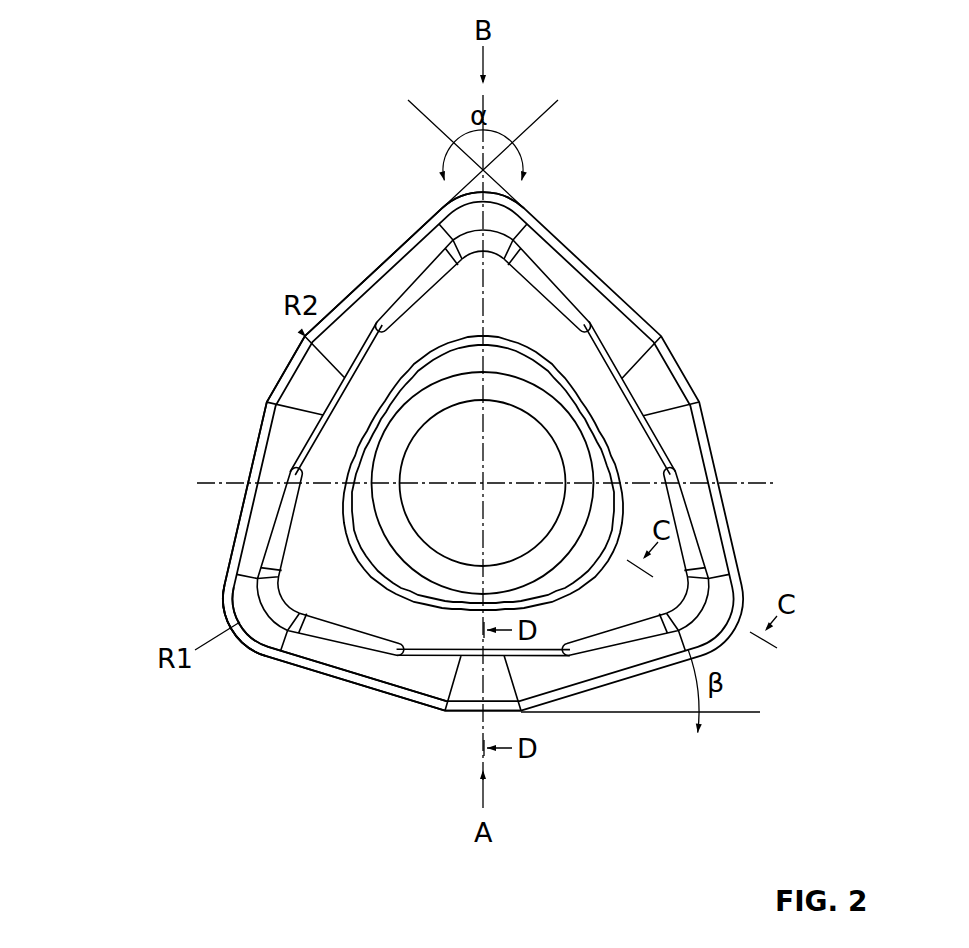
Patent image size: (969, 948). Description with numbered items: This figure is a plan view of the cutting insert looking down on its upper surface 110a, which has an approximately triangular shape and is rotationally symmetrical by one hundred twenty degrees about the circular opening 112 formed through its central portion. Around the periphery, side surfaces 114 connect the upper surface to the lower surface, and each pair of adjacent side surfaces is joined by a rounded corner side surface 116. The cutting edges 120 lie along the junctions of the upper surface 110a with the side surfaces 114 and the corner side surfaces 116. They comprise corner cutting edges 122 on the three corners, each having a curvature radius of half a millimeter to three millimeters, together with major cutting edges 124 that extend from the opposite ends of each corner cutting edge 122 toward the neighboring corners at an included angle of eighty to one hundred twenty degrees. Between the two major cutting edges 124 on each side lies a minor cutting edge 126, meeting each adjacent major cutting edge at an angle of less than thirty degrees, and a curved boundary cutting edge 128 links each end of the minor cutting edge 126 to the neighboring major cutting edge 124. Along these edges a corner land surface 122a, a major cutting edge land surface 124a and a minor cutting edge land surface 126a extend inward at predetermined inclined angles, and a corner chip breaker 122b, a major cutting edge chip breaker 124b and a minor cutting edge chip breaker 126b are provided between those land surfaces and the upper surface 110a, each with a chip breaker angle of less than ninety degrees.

The upper surface 110a is at (530, 323).
The circular opening 112 is at (549, 432).
The side surface 114 is at (708, 417).
The corner side surface 116 is at (522, 206).
The cutting edge 120 is at (93, 205).
The corner cutting edge 122 is at (443, 202).
The major cutting edge 124 is at (367, 270).
The minor cutting edge 126 is at (267, 400).
The boundary cutting edge 128 is at (304, 337).
The corner land surface 122a is at (262, 640).
The corner chip breaker 122b is at (243, 642).
The major cutting edge land surface 124a is at (370, 677).
The major cutting edge chip breaker 124b is at (443, 690).
The minor cutting edge land surface 126a is at (467, 713).
The minor cutting edge chip breaker 126b is at (500, 680).